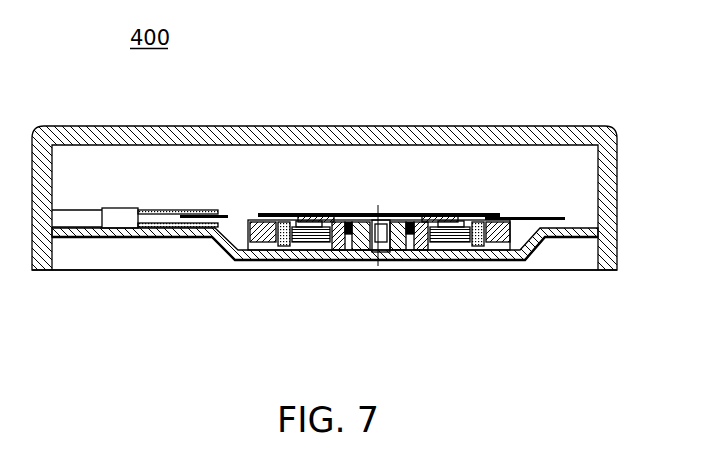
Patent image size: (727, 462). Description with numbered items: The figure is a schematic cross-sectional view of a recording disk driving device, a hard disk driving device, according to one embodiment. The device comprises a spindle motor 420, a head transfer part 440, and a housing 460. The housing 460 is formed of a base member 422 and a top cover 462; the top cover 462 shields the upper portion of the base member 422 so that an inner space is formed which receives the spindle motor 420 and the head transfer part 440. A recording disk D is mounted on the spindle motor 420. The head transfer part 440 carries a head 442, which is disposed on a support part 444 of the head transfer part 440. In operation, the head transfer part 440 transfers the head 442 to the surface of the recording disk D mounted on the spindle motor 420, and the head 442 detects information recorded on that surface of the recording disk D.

The spindle motor 420 is at (397, 265).
The base member 422 is at (609, 270).
The head transfer part 440 is at (119, 221).
The head 442 is at (222, 241).
The support part 444 is at (185, 237).
The housing 460 is at (626, 154).
The top cover 462 is at (348, 126).
The recording disk D is at (548, 230).